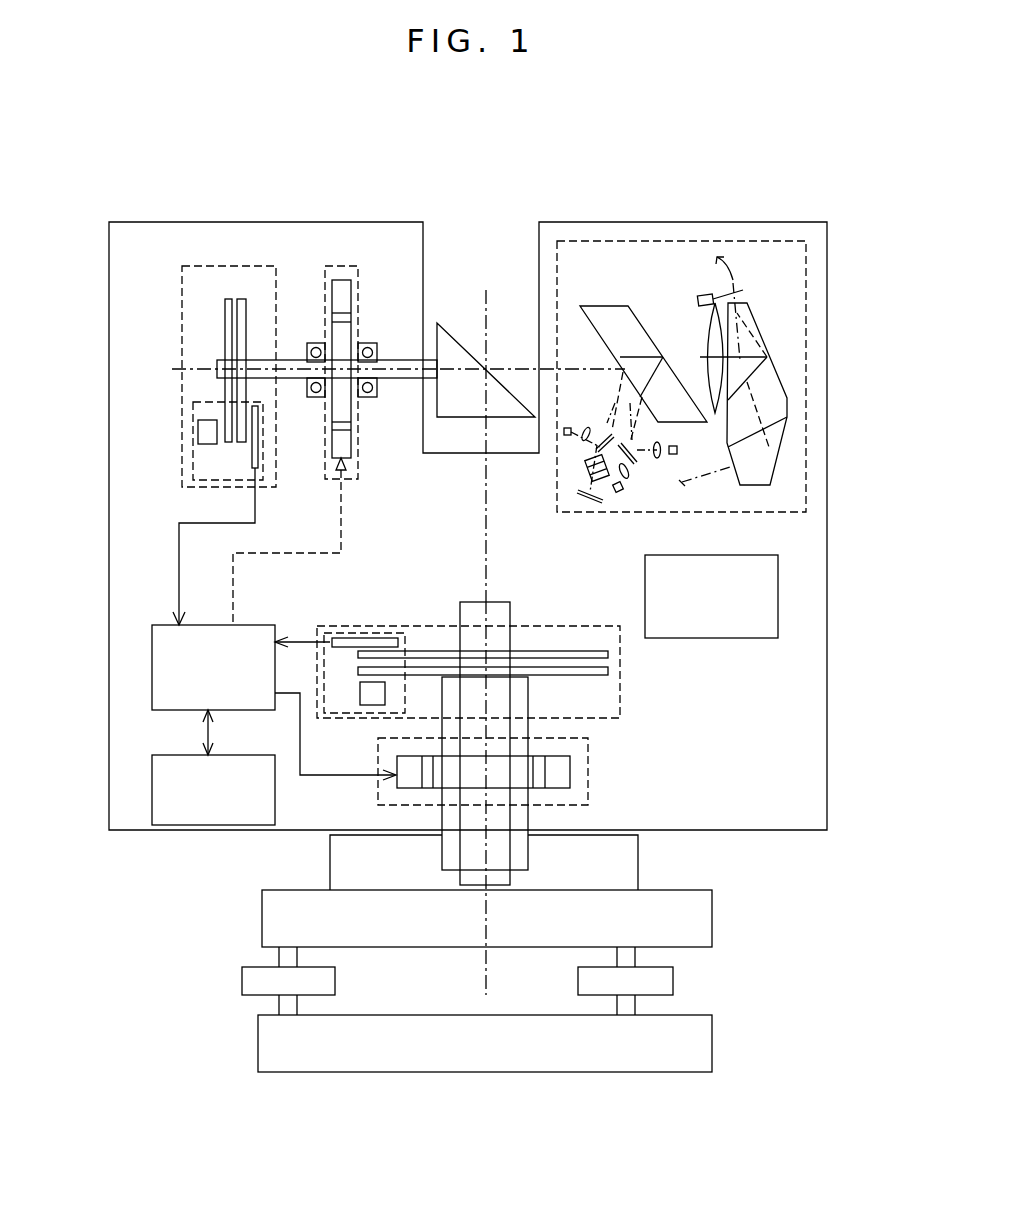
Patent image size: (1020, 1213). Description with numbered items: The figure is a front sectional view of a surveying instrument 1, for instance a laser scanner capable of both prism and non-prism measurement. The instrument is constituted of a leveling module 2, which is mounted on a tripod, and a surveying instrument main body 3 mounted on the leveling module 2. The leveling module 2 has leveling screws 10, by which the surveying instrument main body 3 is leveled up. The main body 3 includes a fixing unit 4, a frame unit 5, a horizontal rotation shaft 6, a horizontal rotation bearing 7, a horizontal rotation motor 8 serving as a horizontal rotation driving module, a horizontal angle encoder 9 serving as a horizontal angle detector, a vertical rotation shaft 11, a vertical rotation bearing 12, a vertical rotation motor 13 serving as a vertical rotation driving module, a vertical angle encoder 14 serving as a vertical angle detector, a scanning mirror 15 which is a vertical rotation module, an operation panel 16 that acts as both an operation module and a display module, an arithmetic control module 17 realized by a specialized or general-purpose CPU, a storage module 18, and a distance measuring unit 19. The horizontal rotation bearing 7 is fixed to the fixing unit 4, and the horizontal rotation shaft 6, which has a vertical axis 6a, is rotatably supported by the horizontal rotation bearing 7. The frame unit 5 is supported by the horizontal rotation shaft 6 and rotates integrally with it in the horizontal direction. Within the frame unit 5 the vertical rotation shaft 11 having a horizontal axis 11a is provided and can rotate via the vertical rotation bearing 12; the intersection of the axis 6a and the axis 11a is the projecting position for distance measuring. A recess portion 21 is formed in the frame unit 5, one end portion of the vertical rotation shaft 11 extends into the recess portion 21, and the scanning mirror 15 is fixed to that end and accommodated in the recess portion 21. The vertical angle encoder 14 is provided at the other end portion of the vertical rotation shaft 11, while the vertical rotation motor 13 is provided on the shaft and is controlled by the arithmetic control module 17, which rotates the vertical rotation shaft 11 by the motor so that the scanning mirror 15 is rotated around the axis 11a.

The surveying instrument 1 is at (84, 174).
The leveling module 2 is at (262, 915).
The surveying instrument main body 3 is at (830, 315).
The fixing unit 4 is at (638, 862).
The frame unit 5 is at (109, 445).
The horizontal rotation shaft 6 is at (510, 640).
The vertical axis 6a is at (486, 545).
The horizontal rotation bearing 7 is at (528, 852).
The horizontal rotation motor 8 is at (588, 775).
The horizontal angle encoder 9 is at (620, 693).
The leveling screws 10 is at (242, 980).
The vertical rotation shaft 11 is at (397, 380).
The horizontal axis 11a is at (205, 366).
The vertical rotation bearing 12 is at (366, 345).
The vertical rotation motor 13 is at (333, 266).
The vertical angle encoder 14 is at (210, 266).
The scanning mirror 15 is at (437, 323).
The operation panel 16 is at (778, 580).
The arithmetic control module 17 is at (152, 670).
The storage module 18 is at (152, 780).
The distance measuring unit 19 is at (663, 241).
The recess portion 21 is at (487, 270).